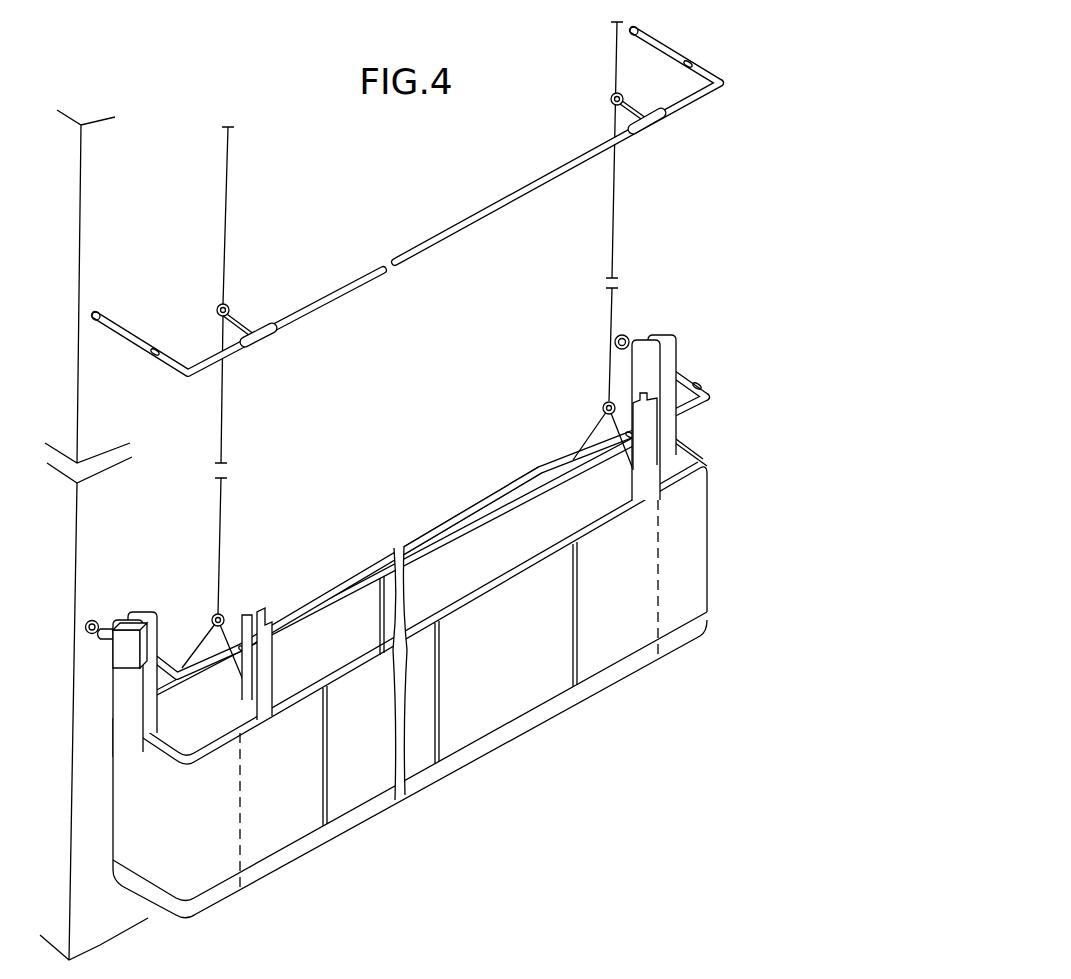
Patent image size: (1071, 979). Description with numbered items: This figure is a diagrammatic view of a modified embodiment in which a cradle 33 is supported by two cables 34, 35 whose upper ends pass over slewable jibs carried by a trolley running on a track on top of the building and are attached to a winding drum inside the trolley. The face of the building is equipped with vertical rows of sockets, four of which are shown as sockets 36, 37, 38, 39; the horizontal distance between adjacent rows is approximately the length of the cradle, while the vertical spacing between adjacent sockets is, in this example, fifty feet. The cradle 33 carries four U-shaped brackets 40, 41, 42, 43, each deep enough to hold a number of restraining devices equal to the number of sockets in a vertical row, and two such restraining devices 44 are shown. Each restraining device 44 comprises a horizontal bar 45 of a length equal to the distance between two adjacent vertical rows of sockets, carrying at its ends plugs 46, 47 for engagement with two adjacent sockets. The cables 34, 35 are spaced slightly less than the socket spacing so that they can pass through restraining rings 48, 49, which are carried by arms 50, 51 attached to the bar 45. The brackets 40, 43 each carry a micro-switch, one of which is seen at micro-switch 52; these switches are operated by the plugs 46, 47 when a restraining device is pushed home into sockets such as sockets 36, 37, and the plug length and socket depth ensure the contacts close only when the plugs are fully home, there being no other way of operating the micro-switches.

The cradle 33 is at (514, 707).
The cable 34 is at (230, 203).
The cable 35 is at (616, 212).
The socket 36 is at (100, 309).
The socket 37 is at (617, 37).
The socket 38 is at (92, 619).
The socket 39 is at (624, 334).
The U-shaped bracket 40 is at (141, 620).
The U-shaped bracket 41 is at (262, 634).
The U-shaped bracket 42 is at (655, 429).
The U-shaped bracket 43 is at (662, 346).
The restraining device 44 is at (446, 231).
The horizontal bar 45 is at (355, 289).
The plug 46 is at (133, 331).
The plug 47 is at (662, 52).
The restraining ring 48 is at (226, 306).
The restraining ring 49 is at (610, 100).
The arm 50 is at (250, 336).
The arm 51 is at (637, 110).
The micro-switch 52 is at (116, 650).